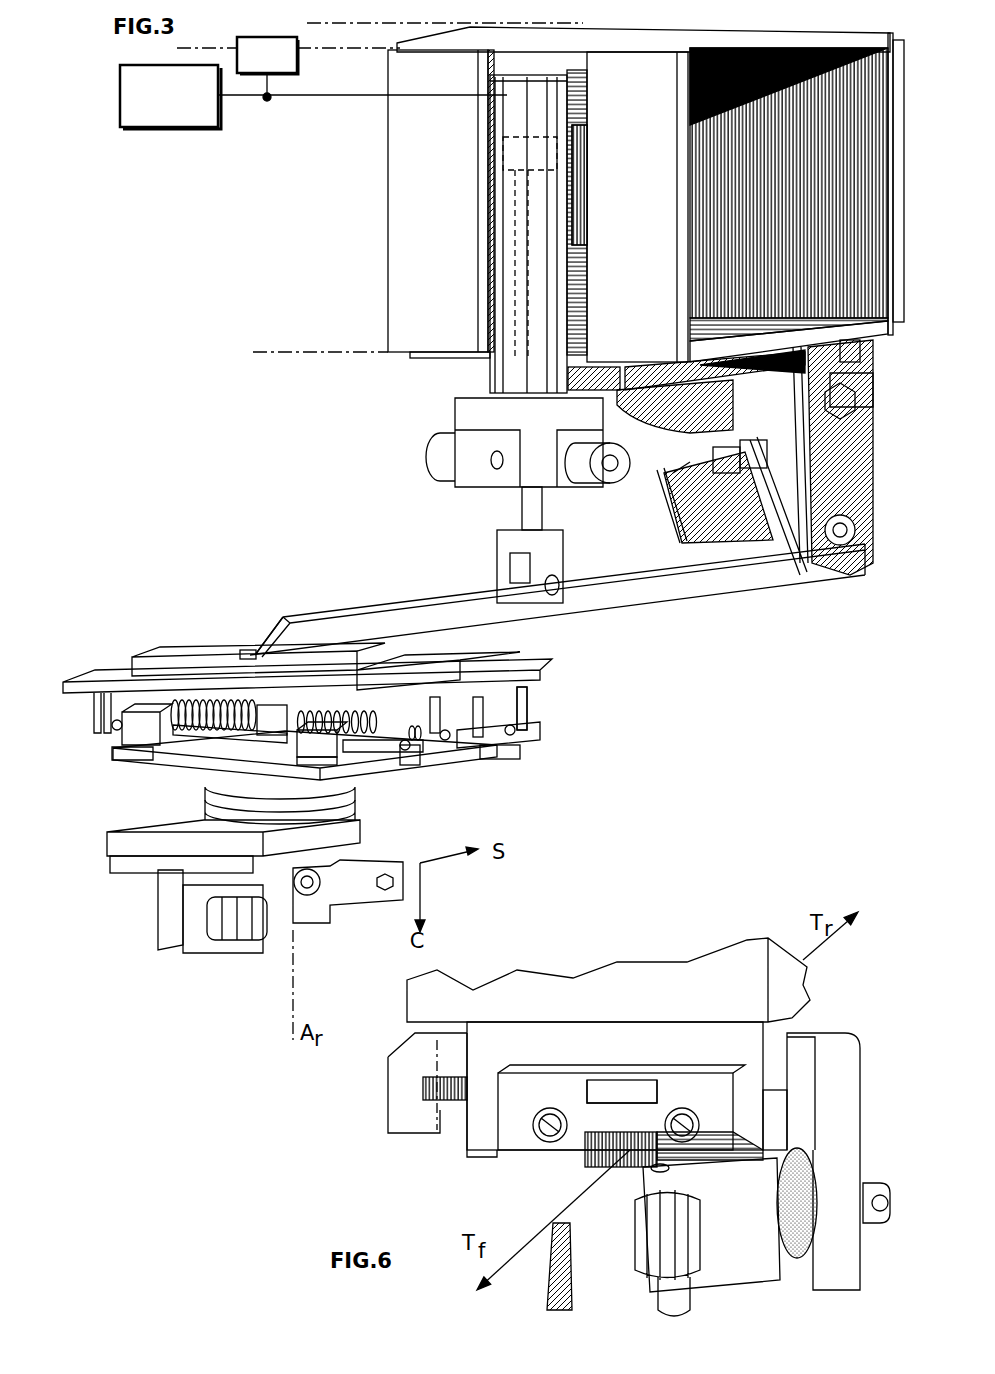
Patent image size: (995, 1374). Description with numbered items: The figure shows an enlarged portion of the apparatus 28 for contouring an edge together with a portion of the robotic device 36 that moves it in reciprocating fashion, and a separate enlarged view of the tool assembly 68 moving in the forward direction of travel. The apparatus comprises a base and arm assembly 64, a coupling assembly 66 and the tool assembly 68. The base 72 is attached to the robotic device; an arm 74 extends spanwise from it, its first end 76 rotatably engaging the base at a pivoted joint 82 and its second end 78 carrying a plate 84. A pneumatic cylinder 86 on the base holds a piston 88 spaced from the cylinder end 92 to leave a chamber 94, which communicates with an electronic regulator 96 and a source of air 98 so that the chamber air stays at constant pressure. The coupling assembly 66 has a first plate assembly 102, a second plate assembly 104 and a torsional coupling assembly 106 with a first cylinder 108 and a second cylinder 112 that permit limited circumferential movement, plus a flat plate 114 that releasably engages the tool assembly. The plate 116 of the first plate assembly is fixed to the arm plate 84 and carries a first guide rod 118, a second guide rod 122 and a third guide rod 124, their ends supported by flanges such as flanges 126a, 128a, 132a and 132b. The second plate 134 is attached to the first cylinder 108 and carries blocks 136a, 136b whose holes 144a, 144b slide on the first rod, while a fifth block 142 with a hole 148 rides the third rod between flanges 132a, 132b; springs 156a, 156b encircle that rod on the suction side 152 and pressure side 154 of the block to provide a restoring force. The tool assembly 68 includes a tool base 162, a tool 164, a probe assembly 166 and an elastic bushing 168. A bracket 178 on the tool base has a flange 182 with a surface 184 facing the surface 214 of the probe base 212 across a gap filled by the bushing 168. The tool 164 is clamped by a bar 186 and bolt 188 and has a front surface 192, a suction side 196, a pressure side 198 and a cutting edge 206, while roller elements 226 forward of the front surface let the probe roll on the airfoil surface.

In FIG. 3, the robotic device 36 is at (470, 27).
In FIG. 3, the end of the pneumatic cylinder 92 is at (545, 75).
In FIG. 3, the chamber 94 is at (514, 114).
In FIG. 3, the piston 88 is at (510, 154).
In FIG. 3, the pneumatic cylinder 86 is at (507, 212).
In FIG. 3, the source of air 98 is at (298, 60).
In FIG. 3, the electronic regulator 96 is at (160, 123).
In FIG. 3, the apparatus 28 is at (270, 432).
In FIG. 3, the base 72 is at (638, 456).
In FIG. 3, the arm 74 is at (670, 586).
In FIG. 3, the first end 76 is at (792, 590).
In FIG. 3, the pivoted joint 82 is at (843, 536).
In FIG. 3, the second end 78 is at (272, 622).
In FIG. 3, the plate 84 is at (238, 648).
In FIG. 3, the plate 116 is at (125, 676).
In FIG. 3, the fifth block 142 is at (270, 715).
In FIG. 3, the hole 148 is at (330, 700).
In FIG. 3, the suction side 152 is at (288, 700).
In FIG. 3, the spring 156a is at (410, 700).
In FIG. 3, the spring 156b is at (190, 705).
In FIG. 3, the flange 132a is at (478, 700).
In FIG. 3, the flange 132b is at (155, 700).
In FIG. 3, the first plate assembly 102 is at (545, 663).
In FIG. 3, the second plate assembly 104 is at (91, 702).
In FIG. 3, the pressure side 154 is at (233, 728).
In FIG. 3, the hole 144a is at (352, 758).
In FIG. 3, the hole 144b is at (145, 737).
In FIG. 3, the block 136a is at (310, 762).
In FIG. 3, the block 136b is at (123, 762).
In FIG. 3, the first cylinder 108 is at (205, 775).
In FIG. 3, the second cylinder 112 is at (237, 806).
In FIG. 3, the torsional coupling assembly 106 is at (350, 792).
In FIG. 3, the first guide rod 118 is at (408, 752).
In FIG. 3, the third guide rod 124 is at (448, 740).
In FIG. 3, the second guide rod 122 is at (512, 736).
In FIG. 3, the second plate 134 is at (490, 760).
In FIG. 3, the flange 126a is at (410, 765).
In FIG. 3, the flange 128a is at (545, 735).
In FIG. 3, the base and arm assembly 64 is at (82, 455).
In FIG. 3, the coupling assembly 66 is at (63, 689).
In FIG. 3, the tool assembly 68 is at (63, 851).
In FIG. 3, the tool base 162 is at (120, 858).
In FIG. 3, the flat plate 114 is at (158, 838).
In FIG. 3, the flange 182 is at (157, 918).
In FIG. 6, the flange 182 is at (855, 1150).
In FIG. 3, the probe assembly 166 is at (213, 948).
In FIG. 3, the elastic bushing 168 is at (180, 915).
In FIG. 6, the elastic bushing 168 is at (800, 1215).
In FIG. 3, the tool 164 is at (308, 908).
In FIG. 6, the bar 186 is at (576, 1080).
In FIG. 6, the bolt 188 is at (548, 1104).
In FIG. 6, the cutting edge 206 is at (607, 1128).
In FIG. 6, the surface 214 is at (797, 1107).
In FIG. 6, the surface 184 is at (797, 1070).
In FIG. 6, the bracket 178 is at (405, 1125).
In FIG. 6, the suction side 196 is at (583, 1160).
In FIG. 6, the front surface 192 is at (603, 1167).
In FIG. 6, the pressure side 198 is at (685, 1155).
In FIG. 6, the probe base 212 is at (718, 1265).
In FIG. 6, the roller elements 226 is at (640, 1240).